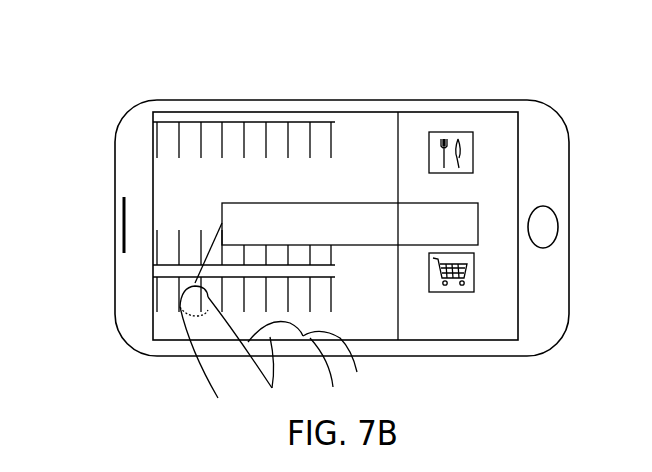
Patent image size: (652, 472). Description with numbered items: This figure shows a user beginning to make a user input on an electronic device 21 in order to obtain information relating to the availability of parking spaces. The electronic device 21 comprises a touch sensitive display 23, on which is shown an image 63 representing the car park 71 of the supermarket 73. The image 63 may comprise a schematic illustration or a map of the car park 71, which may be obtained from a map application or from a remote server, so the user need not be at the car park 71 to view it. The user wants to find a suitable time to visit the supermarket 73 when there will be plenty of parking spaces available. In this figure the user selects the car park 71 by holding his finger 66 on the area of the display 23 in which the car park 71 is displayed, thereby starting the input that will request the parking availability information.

The electronic device 21 is at (398, 100).
The touch sensitive display 23 is at (503, 162).
The image 63 is at (228, 122).
The finger 66 is at (225, 367).
The car park 71 is at (163, 328).
The supermarket 73 is at (452, 295).